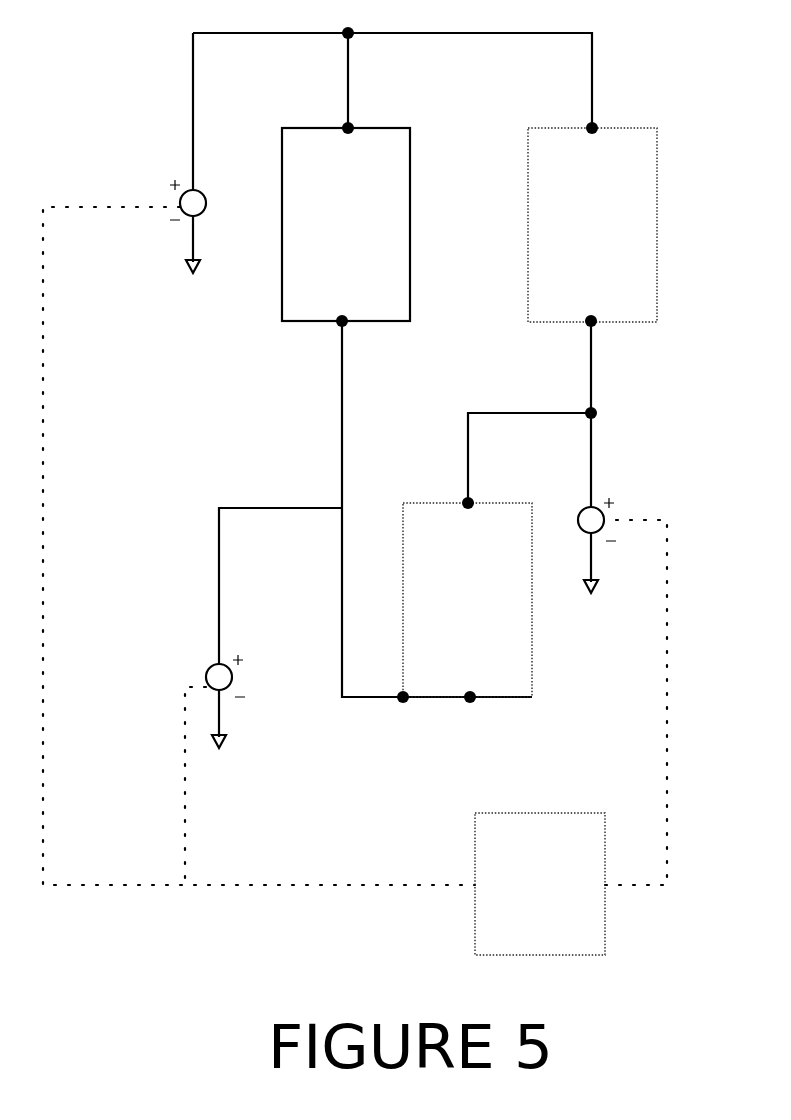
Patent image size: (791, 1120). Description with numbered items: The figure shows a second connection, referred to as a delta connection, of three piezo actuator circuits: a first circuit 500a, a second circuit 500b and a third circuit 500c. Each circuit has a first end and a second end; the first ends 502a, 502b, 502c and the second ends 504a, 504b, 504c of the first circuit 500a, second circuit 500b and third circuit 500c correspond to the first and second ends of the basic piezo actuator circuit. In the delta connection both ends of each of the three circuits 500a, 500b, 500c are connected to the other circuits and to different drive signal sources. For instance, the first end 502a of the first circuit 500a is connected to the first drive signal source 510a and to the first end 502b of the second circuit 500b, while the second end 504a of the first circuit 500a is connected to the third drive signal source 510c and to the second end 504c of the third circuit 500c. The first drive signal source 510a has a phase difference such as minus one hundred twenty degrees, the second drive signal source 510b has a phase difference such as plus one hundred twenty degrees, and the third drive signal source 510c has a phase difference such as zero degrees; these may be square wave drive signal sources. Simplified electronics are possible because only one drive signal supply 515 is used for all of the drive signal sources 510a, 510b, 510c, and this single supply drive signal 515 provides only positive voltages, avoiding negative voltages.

The first circuit 500a is at (387, 236).
The second circuit 500b is at (635, 236).
The third circuit 500c is at (510, 609).
The first end of first circuit 502a is at (352, 128).
The first end of second circuit 502b is at (596, 128).
The first end of third circuit 502c is at (466, 502).
The second end of first circuit 504a is at (340, 321).
The second end of second circuit 504b is at (594, 321).
The second end of third circuit 504c is at (468, 697).
The first drive signal source 510a is at (180, 204).
The second drive signal source 510b is at (605, 519).
The third drive signal source 510c is at (206, 678).
The single supply drive signal 515 is at (572, 904).